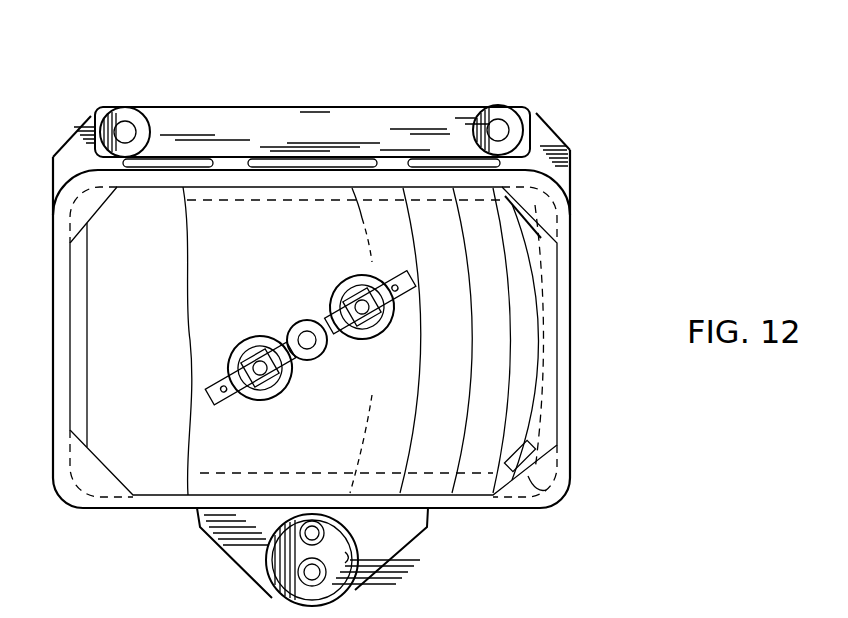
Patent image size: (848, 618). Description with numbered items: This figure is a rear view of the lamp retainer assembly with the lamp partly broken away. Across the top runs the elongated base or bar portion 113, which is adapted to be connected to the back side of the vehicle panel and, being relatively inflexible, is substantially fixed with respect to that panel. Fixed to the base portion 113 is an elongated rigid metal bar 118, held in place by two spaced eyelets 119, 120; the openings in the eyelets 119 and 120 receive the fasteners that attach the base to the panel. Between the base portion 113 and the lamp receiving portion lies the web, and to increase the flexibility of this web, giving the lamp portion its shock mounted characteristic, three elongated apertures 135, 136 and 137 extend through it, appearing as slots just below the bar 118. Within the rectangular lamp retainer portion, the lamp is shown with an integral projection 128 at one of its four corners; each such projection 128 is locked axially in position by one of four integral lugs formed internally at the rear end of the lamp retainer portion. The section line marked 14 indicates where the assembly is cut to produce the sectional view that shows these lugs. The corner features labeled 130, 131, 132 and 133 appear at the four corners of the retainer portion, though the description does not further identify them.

The elongated base or bar portion 113 is at (90, 133).
The elongated rigid metal bar 118 is at (290, 125).
The eyelet 119 is at (487, 120).
The eyelet 120 is at (132, 118).
The integral projection 128 is at (520, 433).
The corner seal 130 is at (98, 485).
The corner seal 131 is at (87, 197).
The corner seal 132 is at (547, 220).
The corner seal 133 is at (530, 483).
The elongated aperture 135 is at (437, 155).
The elongated aperture 136 is at (352, 160).
The elongated aperture 137 is at (187, 157).
The section line 14- 14 is at (498, 152).